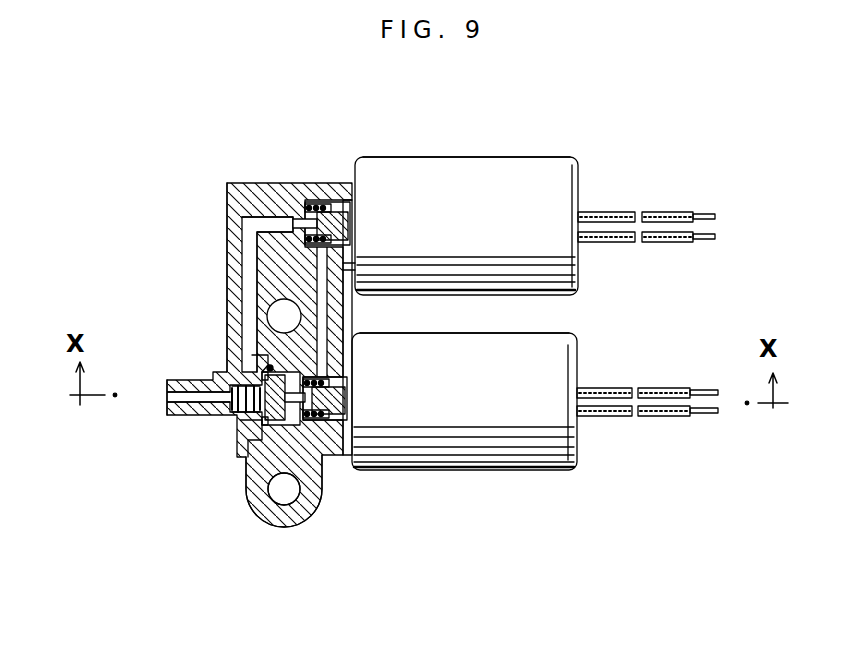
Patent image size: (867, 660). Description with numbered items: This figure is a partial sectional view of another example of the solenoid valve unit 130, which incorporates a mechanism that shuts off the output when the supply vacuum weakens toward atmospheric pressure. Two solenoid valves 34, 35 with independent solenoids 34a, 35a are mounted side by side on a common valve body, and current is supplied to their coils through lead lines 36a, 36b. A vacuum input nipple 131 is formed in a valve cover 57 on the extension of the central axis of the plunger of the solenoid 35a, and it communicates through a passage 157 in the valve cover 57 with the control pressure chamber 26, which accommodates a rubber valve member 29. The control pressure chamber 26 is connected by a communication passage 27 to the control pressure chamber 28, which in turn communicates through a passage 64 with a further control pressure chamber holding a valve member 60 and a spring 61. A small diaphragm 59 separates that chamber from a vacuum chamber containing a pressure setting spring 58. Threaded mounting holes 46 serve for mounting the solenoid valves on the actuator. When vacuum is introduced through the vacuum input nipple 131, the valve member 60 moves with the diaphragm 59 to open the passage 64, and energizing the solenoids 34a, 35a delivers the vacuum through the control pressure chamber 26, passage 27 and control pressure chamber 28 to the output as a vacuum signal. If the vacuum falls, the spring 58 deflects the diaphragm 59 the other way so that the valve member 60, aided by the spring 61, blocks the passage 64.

The valve housing 130 is at (267, 183).
The control pressure chamber 26 is at (305, 203).
The valve member 29 is at (332, 203).
The valve cover 57 is at (227, 240).
The passage 157 is at (248, 270).
The spring 61 is at (262, 356).
The vacuum input nipple 131 is at (177, 380).
The pressure setting spring 58 is at (232, 424).
The small diaphragm 59 is at (238, 432).
The valve member 60 is at (266, 442).
The threaded mounting hole 46 is at (283, 495).
The passage 64 is at (318, 470).
The control pressure chamber 28 is at (343, 452).
The communication passage 27 is at (322, 310).
The solenoid valve 34 is at (541, 157).
The solenoid 34a is at (503, 126).
The upper solenoid lead wires 36a is at (672, 212).
The solenoid valve 35 is at (452, 472).
The solenoid 35a is at (633, 331).
The lead lines 36b is at (663, 387).